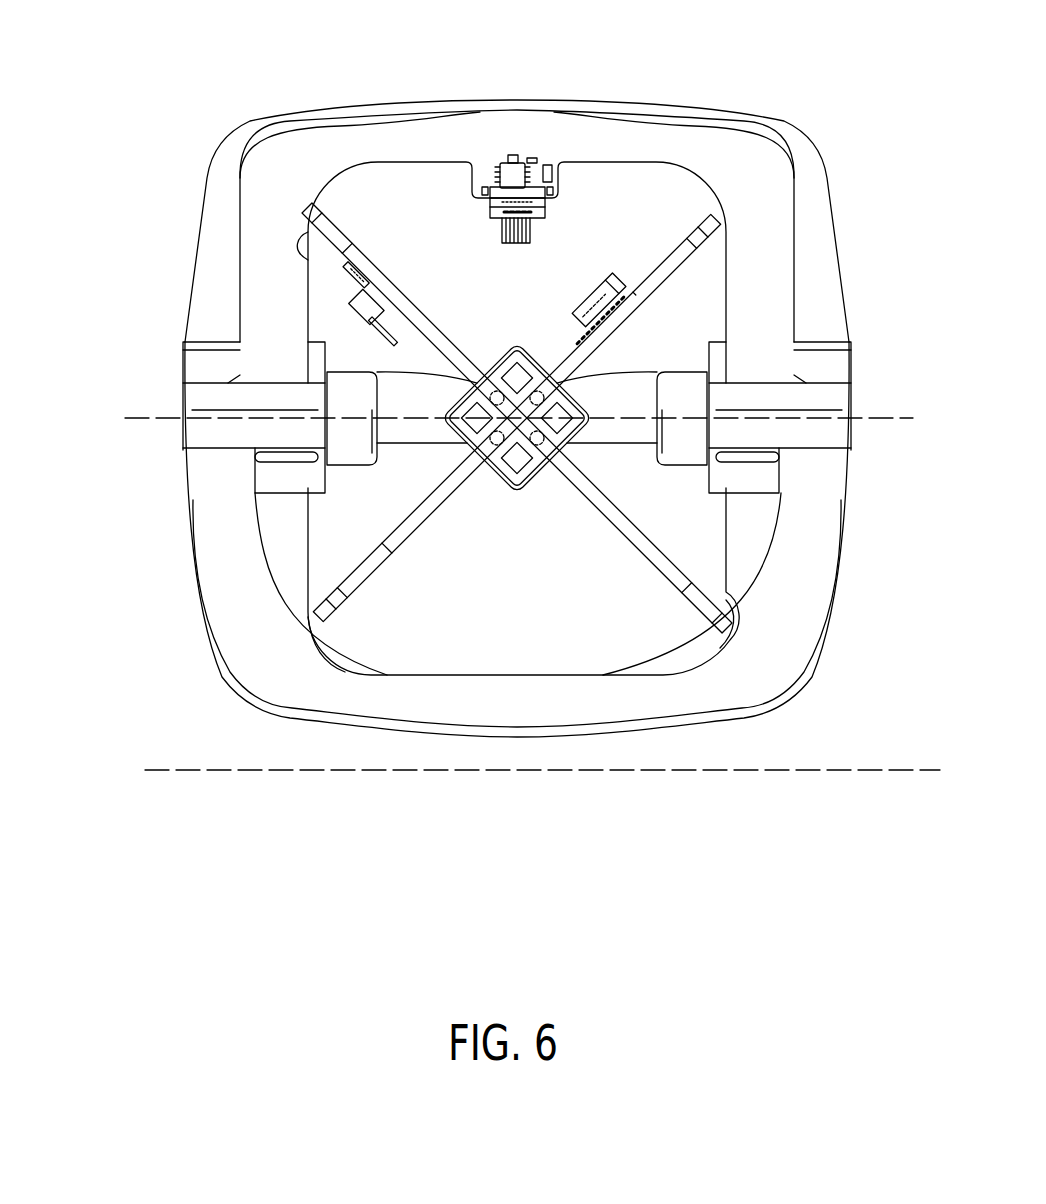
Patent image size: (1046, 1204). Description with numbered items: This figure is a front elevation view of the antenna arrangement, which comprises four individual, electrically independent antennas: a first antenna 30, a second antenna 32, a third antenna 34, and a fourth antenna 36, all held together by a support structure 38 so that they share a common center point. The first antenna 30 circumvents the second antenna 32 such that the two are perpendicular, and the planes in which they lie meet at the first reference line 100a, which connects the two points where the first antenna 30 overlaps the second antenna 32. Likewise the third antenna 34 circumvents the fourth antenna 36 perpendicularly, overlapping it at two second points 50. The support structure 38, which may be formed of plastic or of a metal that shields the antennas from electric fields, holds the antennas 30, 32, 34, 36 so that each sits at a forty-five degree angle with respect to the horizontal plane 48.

The first reference line 100a is at (163, 418).
The first antenna 30 is at (762, 668).
The second antenna 32 is at (760, 170).
The third antenna 34 is at (698, 232).
The fourth antenna 36 is at (417, 295).
The support structure 38 is at (678, 395).
The horizontal plane 48 is at (665, 770).
The second points 50 is at (560, 445).